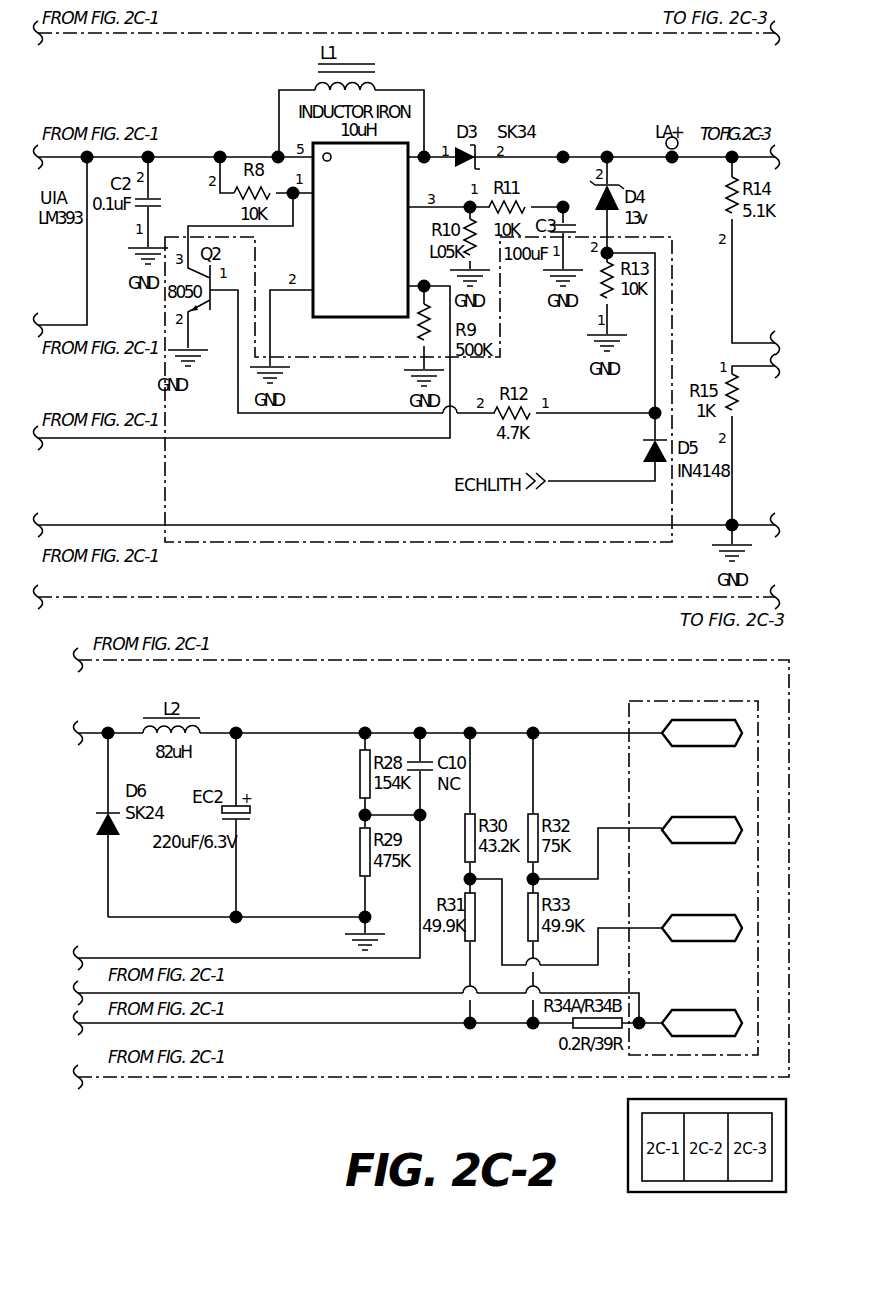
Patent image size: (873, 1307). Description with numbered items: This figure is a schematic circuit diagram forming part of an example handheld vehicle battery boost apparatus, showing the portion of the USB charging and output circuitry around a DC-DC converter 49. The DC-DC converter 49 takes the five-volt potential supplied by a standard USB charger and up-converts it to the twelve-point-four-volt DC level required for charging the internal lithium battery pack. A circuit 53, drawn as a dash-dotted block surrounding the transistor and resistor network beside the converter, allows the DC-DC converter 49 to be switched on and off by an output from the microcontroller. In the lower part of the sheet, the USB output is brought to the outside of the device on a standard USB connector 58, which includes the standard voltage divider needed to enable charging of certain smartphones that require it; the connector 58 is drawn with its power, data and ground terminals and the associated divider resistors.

The DC-DC converter 49 is at (400, 142).
The circuit 53 is at (165, 470).
The USB connector 58 is at (628, 722).